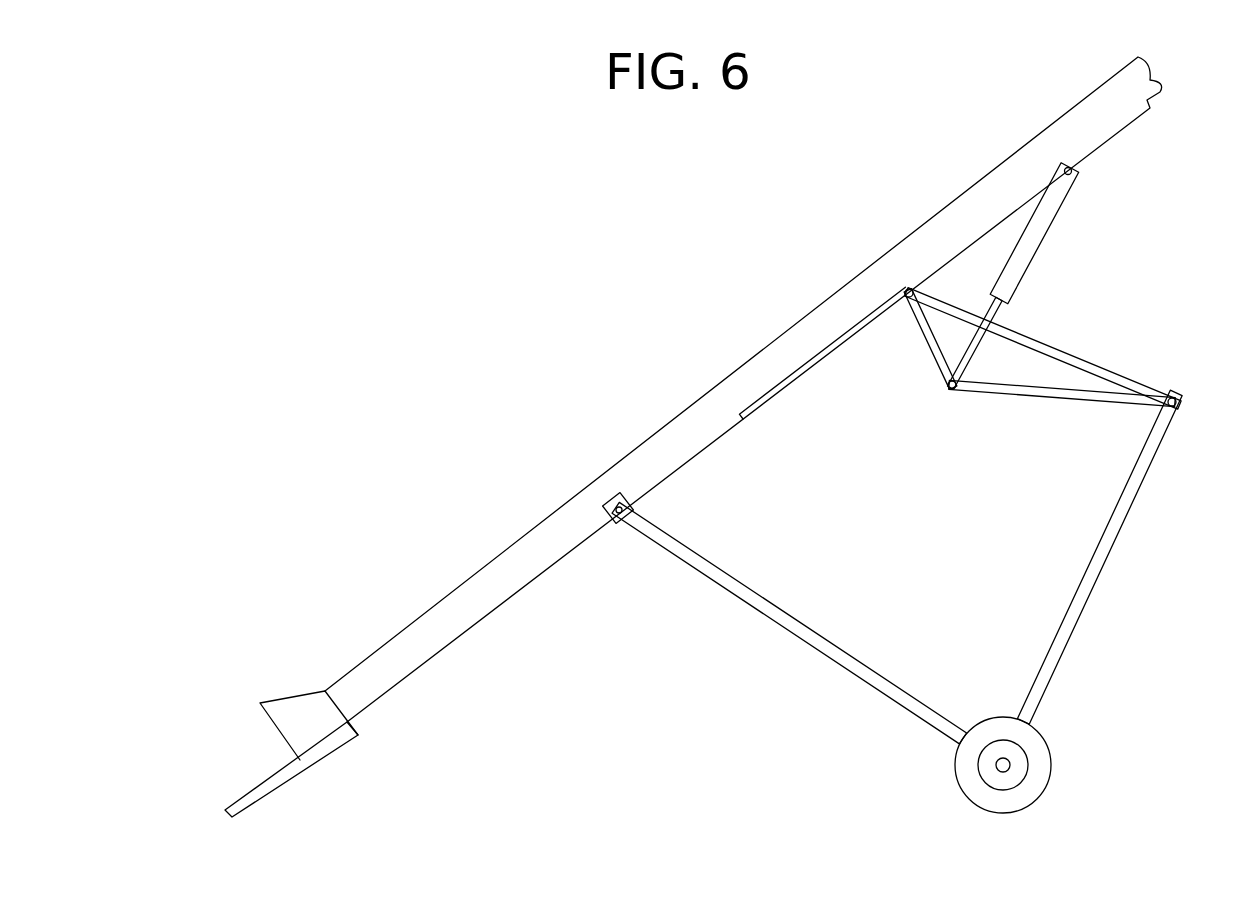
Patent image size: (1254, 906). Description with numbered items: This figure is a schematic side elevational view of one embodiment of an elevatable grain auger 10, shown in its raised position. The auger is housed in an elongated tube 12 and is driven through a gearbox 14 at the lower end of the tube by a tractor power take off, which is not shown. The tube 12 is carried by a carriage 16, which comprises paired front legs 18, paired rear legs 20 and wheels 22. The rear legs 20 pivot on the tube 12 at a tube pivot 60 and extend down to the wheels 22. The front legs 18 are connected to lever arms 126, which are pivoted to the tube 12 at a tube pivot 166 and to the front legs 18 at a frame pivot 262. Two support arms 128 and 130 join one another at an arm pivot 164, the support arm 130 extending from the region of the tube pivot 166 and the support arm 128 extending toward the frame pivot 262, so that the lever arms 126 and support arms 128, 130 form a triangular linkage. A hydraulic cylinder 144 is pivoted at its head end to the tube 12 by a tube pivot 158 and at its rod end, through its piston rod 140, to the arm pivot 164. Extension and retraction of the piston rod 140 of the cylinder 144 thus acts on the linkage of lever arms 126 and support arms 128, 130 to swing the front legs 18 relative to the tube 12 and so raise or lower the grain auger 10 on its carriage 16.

The elevatable grain auger 10 is at (712, 437).
The elongated tube 12 is at (532, 543).
The gearbox 14 is at (283, 722).
The carriage 16 is at (897, 601).
The front legs 18 is at (1100, 557).
The rear legs 20 is at (755, 602).
The wheels 22 is at (1033, 752).
The tube pivot 60 is at (620, 520).
The lever arms 126 is at (1108, 373).
The support arm 128 is at (1057, 393).
The support arm 130 is at (928, 357).
The piston rod 140 is at (973, 347).
The cylinder 144 is at (1032, 238).
The tube pivot 158 is at (1072, 172).
The arm pivot 164 is at (948, 390).
The tube pivot 166 is at (906, 293).
The frame pivot 262 is at (1177, 403).